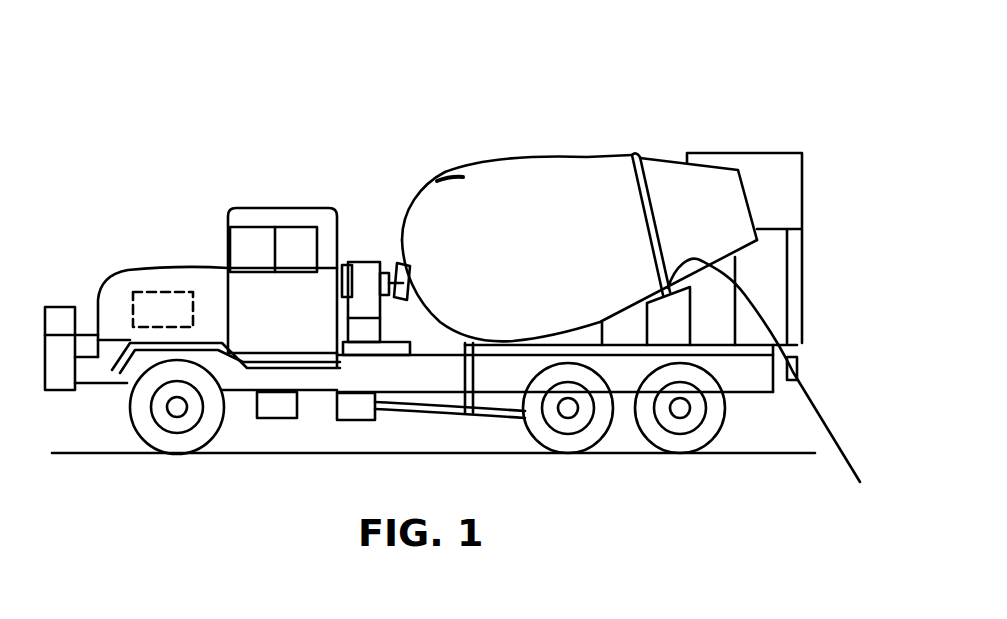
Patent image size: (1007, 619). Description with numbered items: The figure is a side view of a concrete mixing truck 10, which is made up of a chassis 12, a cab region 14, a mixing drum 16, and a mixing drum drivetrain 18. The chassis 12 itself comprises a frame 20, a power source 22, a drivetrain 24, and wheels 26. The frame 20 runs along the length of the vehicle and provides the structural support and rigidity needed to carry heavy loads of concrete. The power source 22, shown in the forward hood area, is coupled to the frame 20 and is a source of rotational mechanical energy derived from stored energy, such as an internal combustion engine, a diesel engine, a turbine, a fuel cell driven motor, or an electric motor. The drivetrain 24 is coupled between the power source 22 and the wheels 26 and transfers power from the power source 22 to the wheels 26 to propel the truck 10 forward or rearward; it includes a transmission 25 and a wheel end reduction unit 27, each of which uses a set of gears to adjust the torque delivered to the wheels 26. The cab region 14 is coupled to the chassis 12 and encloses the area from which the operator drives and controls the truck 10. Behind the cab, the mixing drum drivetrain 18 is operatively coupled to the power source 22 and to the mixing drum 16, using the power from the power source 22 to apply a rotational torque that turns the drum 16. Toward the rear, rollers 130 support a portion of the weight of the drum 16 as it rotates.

The concrete mixing truck 10 is at (357, 130).
The chassis 12 is at (440, 440).
The cab region 14 is at (205, 248).
The mixing drum 16 is at (523, 153).
The mixing drum drivetrain 18 is at (368, 258).
The frame 20 is at (403, 368).
The power source 22 is at (163, 305).
The drivetrain 24 is at (487, 418).
The transmission 25 is at (272, 403).
The wheels 26 is at (175, 435).
The wheel end reduction unit 27 is at (355, 402).
The rollers 130 is at (784, 391).